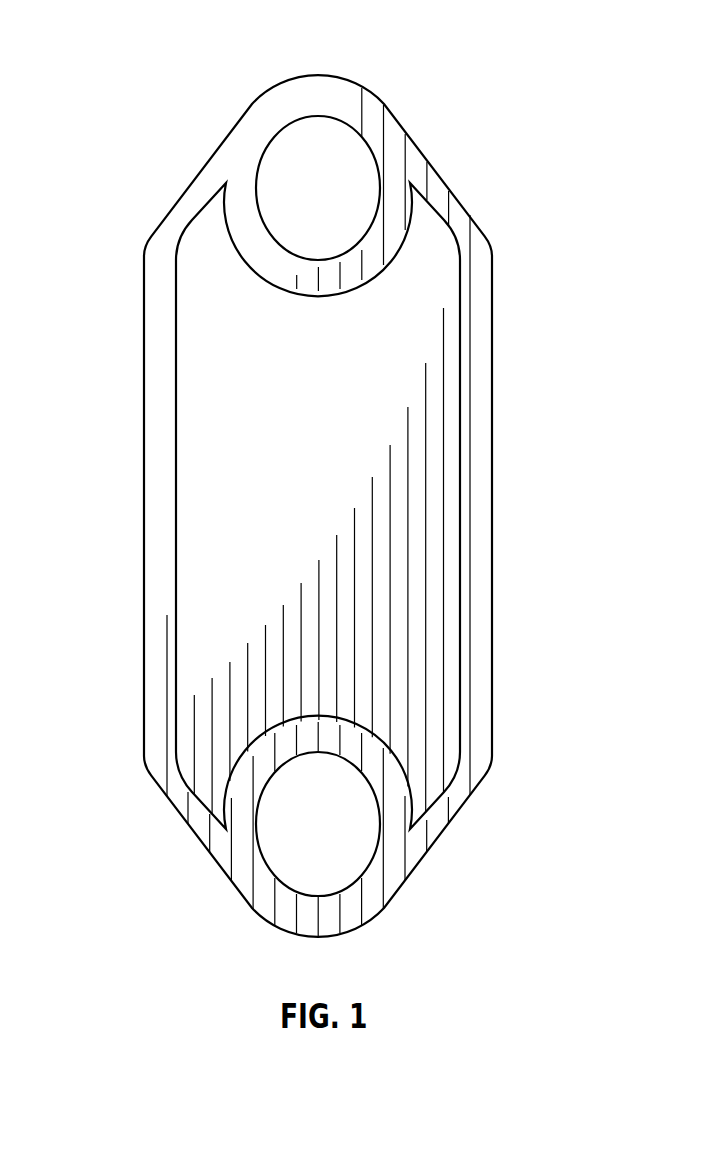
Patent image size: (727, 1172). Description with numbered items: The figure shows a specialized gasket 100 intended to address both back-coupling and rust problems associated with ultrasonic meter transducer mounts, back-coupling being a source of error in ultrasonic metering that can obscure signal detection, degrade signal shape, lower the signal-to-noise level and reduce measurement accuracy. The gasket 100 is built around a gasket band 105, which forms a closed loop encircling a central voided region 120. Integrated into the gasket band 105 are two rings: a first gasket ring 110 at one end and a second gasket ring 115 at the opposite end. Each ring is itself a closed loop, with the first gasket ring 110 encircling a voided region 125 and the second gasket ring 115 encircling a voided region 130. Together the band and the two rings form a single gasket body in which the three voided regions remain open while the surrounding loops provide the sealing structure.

The gasket 100 is at (138, 55).
The gasket band 105 is at (487, 507).
The first gasket ring 110 is at (263, 240).
The second gasket ring 115 is at (265, 772).
The voided region 120 is at (225, 508).
The voided region 125 is at (310, 138).
The voided region 130 is at (310, 873).